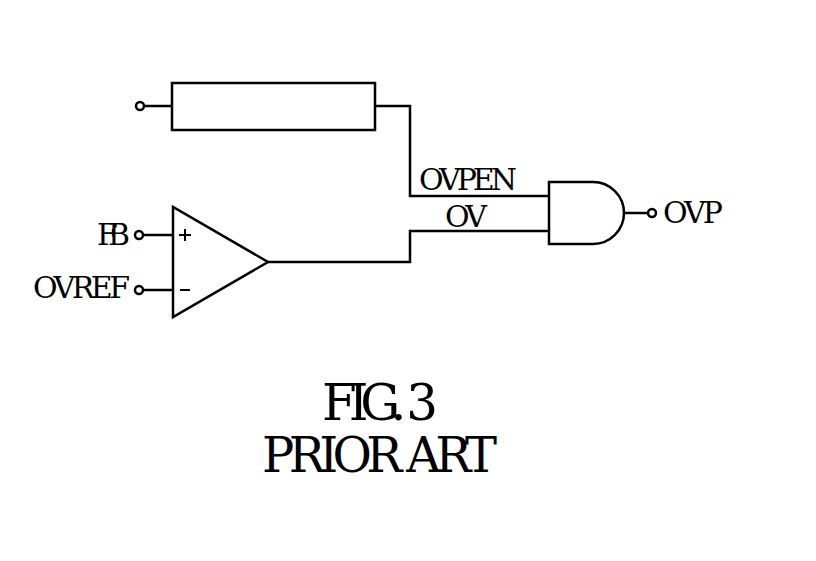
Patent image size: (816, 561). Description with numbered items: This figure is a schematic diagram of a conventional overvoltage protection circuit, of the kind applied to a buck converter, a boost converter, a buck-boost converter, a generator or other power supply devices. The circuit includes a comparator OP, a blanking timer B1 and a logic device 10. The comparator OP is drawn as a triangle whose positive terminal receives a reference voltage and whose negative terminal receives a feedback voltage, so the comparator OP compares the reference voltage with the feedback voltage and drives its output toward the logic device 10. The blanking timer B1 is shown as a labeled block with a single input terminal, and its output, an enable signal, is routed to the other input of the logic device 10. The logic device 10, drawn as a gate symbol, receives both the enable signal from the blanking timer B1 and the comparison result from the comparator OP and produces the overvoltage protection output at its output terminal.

The blanking timer B1 is at (274, 83).
The comparator OP is at (218, 233).
The logic device 10 is at (593, 190).